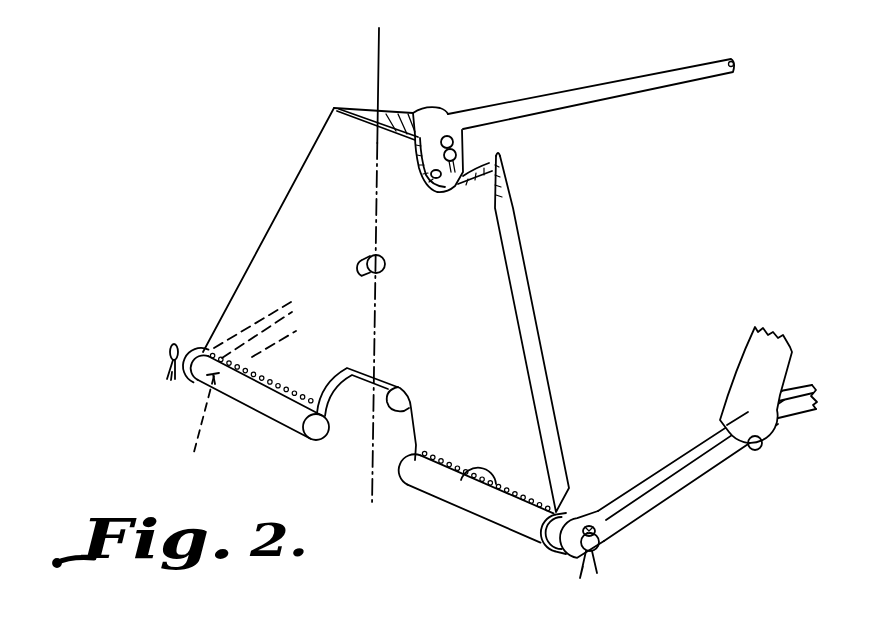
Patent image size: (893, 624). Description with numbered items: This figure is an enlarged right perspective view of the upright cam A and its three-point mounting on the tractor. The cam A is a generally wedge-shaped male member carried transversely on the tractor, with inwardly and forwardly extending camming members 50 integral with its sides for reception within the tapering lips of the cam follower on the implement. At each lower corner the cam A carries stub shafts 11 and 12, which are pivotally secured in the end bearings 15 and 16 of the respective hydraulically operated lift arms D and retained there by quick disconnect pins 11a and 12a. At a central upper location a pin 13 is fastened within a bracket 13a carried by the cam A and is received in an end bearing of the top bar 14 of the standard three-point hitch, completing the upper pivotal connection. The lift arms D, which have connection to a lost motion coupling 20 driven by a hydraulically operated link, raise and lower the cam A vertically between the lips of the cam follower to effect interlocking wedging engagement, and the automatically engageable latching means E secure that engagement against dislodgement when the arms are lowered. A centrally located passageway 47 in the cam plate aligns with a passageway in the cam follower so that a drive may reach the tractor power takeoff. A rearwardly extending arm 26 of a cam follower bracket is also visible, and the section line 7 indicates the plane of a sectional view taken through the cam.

The section line 7- 7 is at (366, 41).
The upright cam A is at (287, 234).
The latching means E is at (362, 258).
The stub shaft 11 is at (170, 357).
The quick disconnect pin 11a is at (178, 348).
The end bearing 15 is at (180, 388).
The hydraulic lift arms D is at (740, 510).
The passageway 47 is at (408, 412).
The rearwardly extending arm 26 is at (465, 478).
The end bearing 16 is at (556, 556).
The stub shaft 12 is at (598, 552).
The quick disconnect pin 12a is at (598, 518).
The lost motion coupling 20 is at (746, 347).
The camming member 50 is at (536, 312).
The pin 13 is at (462, 138).
The bracket 13a is at (435, 193).
The top bar 14 is at (680, 84).